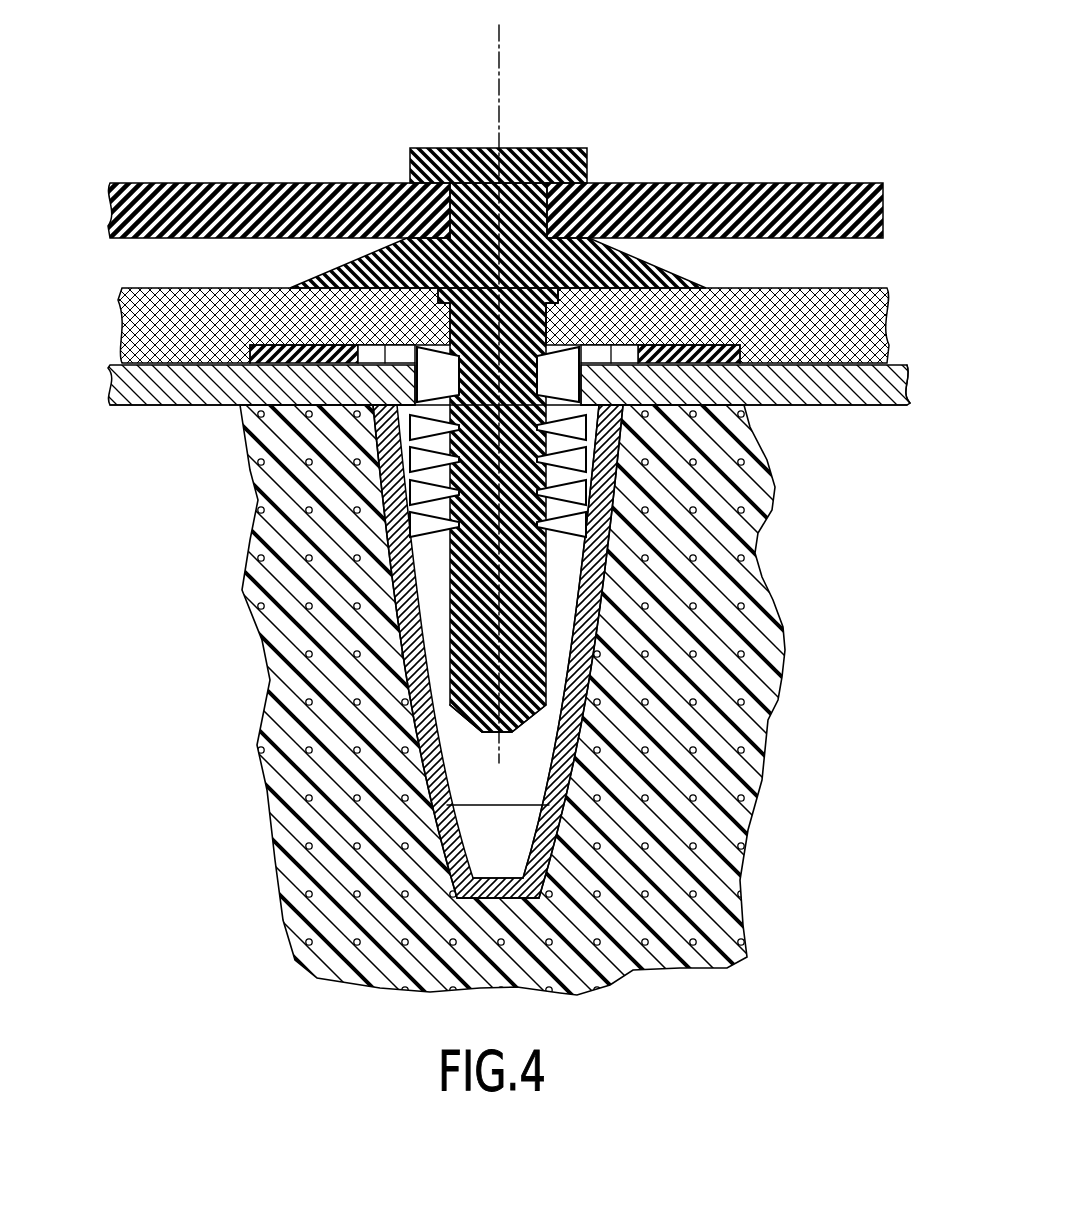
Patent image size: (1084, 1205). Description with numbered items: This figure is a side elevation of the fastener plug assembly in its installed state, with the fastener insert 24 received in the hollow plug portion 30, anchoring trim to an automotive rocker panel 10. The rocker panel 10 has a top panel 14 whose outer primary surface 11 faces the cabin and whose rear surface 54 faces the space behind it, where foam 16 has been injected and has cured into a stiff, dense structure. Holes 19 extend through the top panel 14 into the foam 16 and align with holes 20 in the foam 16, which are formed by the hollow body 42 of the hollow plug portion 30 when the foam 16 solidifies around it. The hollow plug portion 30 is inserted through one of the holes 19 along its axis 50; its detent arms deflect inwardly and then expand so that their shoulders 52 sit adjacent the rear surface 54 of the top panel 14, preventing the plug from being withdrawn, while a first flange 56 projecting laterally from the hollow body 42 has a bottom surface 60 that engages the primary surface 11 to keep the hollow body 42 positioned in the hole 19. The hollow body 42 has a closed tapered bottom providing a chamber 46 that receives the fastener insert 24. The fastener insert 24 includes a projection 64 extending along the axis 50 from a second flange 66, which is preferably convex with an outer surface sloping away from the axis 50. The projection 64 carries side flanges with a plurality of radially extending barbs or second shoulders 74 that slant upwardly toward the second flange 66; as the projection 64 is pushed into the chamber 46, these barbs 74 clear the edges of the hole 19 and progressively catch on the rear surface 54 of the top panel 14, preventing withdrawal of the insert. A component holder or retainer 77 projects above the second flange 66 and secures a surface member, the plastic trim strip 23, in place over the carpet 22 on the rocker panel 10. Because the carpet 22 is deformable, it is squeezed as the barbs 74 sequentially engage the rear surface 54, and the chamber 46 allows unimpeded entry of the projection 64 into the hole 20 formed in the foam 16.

The rocker panel 10 is at (243, 592).
The primary surface 11 is at (905, 372).
The top panel 14 is at (835, 356).
The foam 16 is at (718, 862).
The holes 19 is at (620, 355).
The holes 20 is at (391, 602).
The carpet 22 is at (140, 327).
The trim strip 23 is at (782, 187).
The fastener insert 24 is at (589, 148).
The hollow plug portion 30 is at (573, 798).
The hollow body 42 is at (593, 667).
The chamber 46 is at (512, 773).
The axis 50 is at (500, 52).
The shoulders 52 is at (376, 402).
The rear surface 54 is at (178, 407).
The first flange 56 is at (265, 358).
The bottom surface 60 is at (717, 335).
The projection 64 is at (477, 722).
The second flange 66 is at (350, 240).
The barbs or second shoulders 74 is at (410, 487).
The component holder or retainer 77 is at (422, 148).